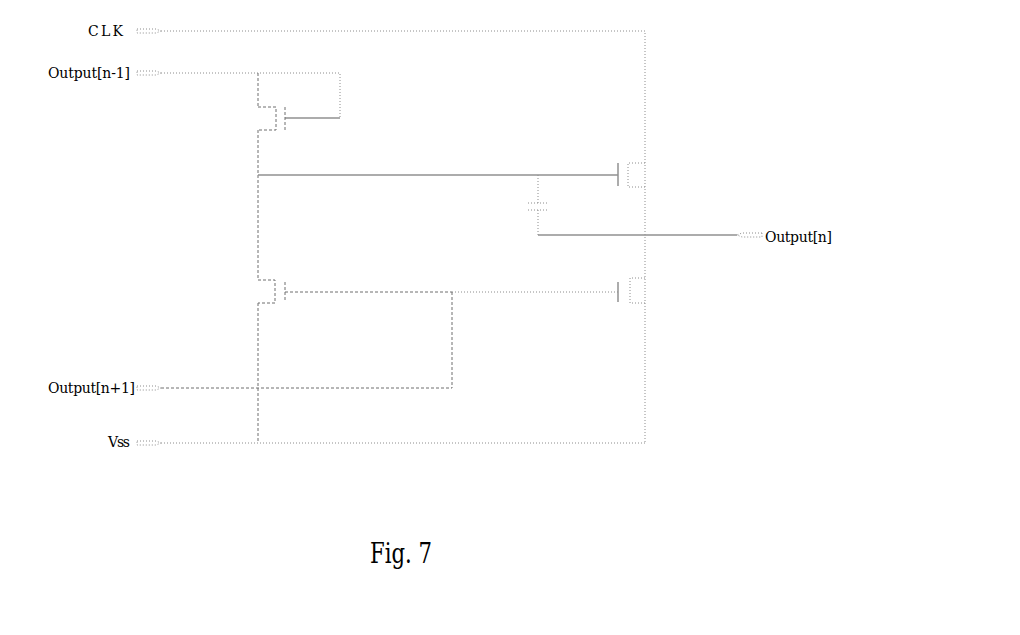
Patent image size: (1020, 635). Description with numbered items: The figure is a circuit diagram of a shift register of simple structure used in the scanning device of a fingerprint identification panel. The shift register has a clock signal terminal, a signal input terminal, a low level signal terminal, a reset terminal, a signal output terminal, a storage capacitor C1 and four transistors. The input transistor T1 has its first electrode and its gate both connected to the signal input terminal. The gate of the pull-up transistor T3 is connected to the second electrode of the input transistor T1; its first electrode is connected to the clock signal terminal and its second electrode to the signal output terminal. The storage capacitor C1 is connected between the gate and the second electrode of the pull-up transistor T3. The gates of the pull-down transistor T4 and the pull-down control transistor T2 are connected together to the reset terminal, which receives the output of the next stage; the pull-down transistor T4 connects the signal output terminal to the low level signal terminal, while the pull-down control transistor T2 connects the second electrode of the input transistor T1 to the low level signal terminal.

The input transistor T1 is at (268, 119).
The pull-down control transistor T2 is at (267, 291).
The pull-up transistor T3 is at (634, 175).
The pull-down transistor T4 is at (636, 290).
The storage capacitor C1 is at (525, 208).